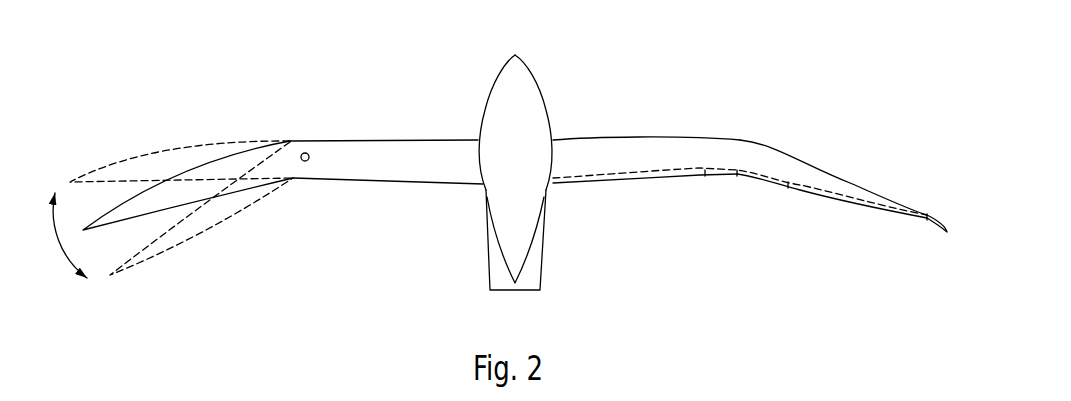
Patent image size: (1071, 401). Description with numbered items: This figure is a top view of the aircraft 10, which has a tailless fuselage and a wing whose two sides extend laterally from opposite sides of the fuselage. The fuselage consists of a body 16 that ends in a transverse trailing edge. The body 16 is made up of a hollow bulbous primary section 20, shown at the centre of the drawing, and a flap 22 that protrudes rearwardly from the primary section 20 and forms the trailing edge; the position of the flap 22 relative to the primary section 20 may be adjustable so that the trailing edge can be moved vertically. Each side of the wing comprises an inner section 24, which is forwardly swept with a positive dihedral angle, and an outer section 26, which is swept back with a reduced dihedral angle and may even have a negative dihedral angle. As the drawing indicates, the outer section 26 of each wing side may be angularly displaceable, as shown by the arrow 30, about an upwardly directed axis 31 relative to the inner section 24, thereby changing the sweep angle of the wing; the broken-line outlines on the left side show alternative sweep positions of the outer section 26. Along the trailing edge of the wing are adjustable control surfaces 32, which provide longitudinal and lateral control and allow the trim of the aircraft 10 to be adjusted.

The aircraft 10 is at (410, 55).
The body 16 is at (480, 60).
The primary section 20 is at (582, 67).
The flap 22 is at (537, 270).
The inner section 24 is at (643, 123).
The outer section 26 is at (873, 175).
The arrow 30 is at (56, 252).
The upwardly directed axis 31 is at (305, 128).
The adjustable control surfaces 32 is at (727, 203).